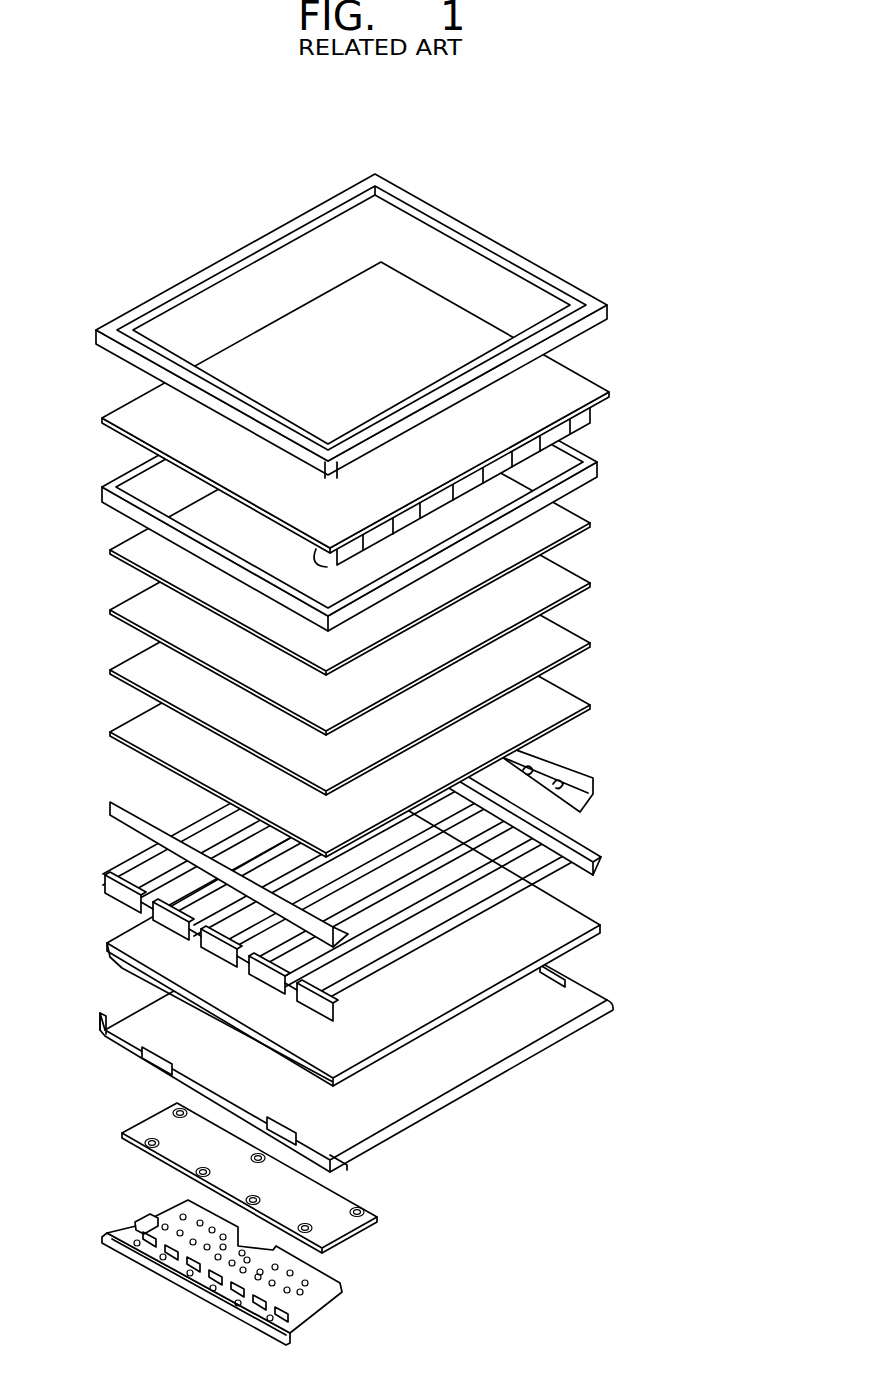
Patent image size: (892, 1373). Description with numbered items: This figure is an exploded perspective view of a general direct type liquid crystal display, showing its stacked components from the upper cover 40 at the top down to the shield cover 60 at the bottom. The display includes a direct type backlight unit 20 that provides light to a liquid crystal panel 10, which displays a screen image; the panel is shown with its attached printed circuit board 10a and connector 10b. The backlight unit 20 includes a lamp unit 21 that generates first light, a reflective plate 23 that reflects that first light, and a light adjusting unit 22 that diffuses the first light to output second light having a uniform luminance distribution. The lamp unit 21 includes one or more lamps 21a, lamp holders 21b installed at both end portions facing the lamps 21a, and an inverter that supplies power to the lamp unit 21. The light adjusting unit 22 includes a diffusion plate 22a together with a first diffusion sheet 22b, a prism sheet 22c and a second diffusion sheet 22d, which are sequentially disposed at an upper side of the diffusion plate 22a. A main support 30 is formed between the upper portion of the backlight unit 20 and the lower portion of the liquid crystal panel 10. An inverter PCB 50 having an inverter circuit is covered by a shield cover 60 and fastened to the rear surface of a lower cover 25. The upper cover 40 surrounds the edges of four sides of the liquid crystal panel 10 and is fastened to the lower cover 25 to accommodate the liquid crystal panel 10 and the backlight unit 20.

The liquid crystal panel 10 is at (600, 405).
The printed circuit board 10a is at (112, 813).
The connector 10b is at (593, 793).
The backlight unit 20 is at (400, 711).
The lamp unit 21 is at (412, 870).
The lamps 21a is at (527, 897).
The lamp holders 21b is at (595, 862).
The light adjusting unit 22 is at (416, 629).
The diffusion plate 22a is at (590, 707).
The first diffusion sheet 22b is at (590, 645).
The prism sheet 22c is at (590, 585).
The second diffusion sheet 22d is at (390, 538).
The reflective plate 23 is at (598, 935).
The lower cover 25 is at (590, 1022).
The mold frame 30 is at (597, 465).
The upper cover 40 is at (602, 323).
The inverter PCB 50 is at (345, 1232).
The shield cover 60 is at (313, 1303).